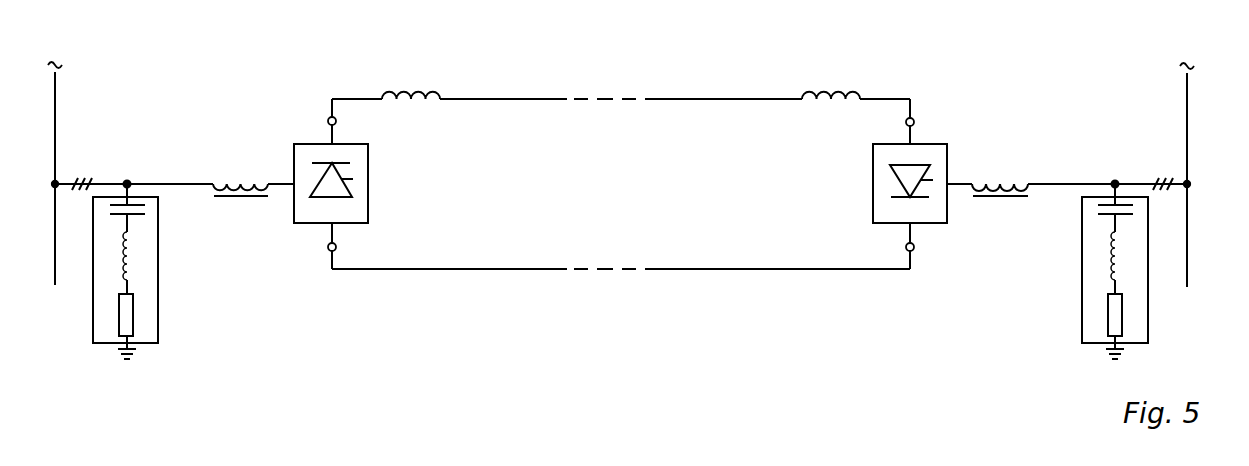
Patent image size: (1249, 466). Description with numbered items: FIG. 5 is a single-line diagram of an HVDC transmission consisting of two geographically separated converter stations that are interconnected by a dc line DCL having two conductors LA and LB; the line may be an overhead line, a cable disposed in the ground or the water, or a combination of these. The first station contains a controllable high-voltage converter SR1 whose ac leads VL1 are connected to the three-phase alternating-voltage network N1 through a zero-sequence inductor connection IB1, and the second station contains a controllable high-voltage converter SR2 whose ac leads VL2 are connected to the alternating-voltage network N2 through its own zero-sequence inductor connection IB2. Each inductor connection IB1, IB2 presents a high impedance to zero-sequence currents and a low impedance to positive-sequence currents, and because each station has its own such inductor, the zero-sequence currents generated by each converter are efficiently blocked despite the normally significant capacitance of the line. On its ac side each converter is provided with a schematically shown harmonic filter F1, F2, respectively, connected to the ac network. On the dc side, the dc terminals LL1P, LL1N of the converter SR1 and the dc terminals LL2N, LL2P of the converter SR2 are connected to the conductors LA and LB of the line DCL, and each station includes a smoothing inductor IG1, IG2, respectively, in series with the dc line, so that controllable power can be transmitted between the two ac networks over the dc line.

The alternating-voltage network N1 is at (53, 247).
The alternating-voltage network N2 is at (1190, 250).
The harmonic filter F1 is at (160, 303).
The harmonic filter F2 is at (1080, 303).
The inductor connection IB1 is at (235, 178).
The inductor connection IB2 is at (1005, 178).
The ac leads VL1 is at (283, 186).
The ac leads VL2 is at (960, 188).
The dc terminal LL1P is at (328, 118).
The dc terminal LL1N is at (328, 247).
The dc terminal LL2N is at (917, 120).
The dc terminal LL2P is at (917, 250).
The controllable high-voltage converter SR1 is at (372, 181).
The controllable high-voltage converter SR2 is at (872, 181).
The smoothing inductor IG1 is at (405, 95).
The smoothing inductor IG2 is at (828, 95).
The conductor LA is at (606, 97).
The conductor LB is at (621, 272).
The line DCL is at (598, 262).